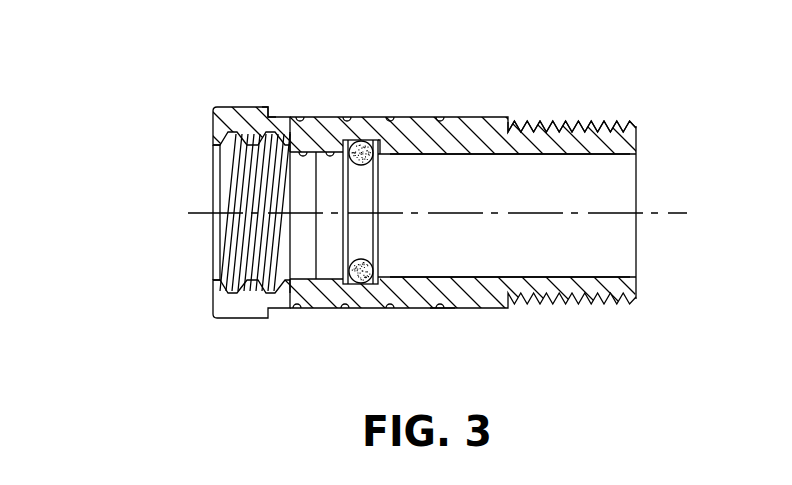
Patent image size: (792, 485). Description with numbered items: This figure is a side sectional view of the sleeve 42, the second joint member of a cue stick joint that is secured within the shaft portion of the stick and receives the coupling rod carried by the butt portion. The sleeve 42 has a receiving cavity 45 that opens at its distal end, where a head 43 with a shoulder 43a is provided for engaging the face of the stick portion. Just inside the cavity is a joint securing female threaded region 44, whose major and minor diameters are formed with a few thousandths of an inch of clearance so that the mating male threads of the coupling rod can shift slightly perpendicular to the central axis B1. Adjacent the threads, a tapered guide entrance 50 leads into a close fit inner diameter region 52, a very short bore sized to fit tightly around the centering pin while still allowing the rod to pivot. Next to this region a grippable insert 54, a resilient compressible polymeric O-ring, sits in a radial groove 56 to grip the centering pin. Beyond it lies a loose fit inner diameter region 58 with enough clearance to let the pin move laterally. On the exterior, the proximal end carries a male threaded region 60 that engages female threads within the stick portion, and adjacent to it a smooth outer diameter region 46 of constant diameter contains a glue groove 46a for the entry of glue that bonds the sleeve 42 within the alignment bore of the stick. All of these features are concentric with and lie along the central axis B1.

The sleeve 42 is at (703, 82).
The head 43 is at (238, 106).
The shoulder 43a is at (273, 117).
The female threaded region 44 is at (227, 161).
The receiving cavity 45 is at (178, 230).
The smooth outer diameter region 46 is at (412, 309).
The glue groove 46a is at (440, 309).
The tapered guide entrance 50 is at (303, 148).
The close fit inner diameter region 52 is at (346, 117).
The grippable insert 54 is at (362, 284).
The radial groove 56 is at (381, 118).
The loose fit inner diameter region 58 is at (517, 276).
The male threaded region 60 is at (585, 127).
The central axis B1 is at (657, 213).